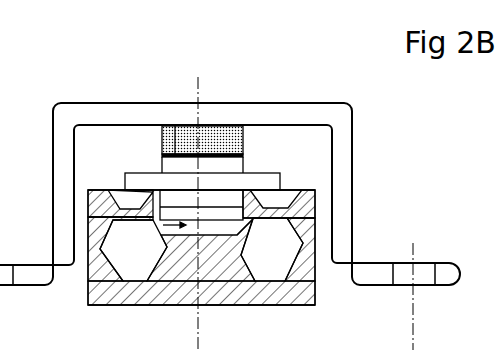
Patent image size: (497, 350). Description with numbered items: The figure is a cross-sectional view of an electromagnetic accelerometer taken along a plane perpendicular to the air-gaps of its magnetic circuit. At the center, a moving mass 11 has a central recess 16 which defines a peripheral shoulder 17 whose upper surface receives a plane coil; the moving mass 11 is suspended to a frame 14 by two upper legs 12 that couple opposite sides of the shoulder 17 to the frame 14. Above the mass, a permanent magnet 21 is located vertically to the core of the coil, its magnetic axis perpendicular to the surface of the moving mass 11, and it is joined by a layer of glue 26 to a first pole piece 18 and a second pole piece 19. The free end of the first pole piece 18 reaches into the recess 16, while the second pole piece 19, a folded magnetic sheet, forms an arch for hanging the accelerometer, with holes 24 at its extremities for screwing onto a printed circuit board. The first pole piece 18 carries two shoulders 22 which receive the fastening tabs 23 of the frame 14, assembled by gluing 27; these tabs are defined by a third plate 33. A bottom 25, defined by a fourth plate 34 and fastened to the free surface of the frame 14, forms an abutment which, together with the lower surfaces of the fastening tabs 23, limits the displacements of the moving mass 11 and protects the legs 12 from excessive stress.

The moving mass 11 is at (252, 275).
The upper legs 12 is at (117, 222).
The frame 14 is at (88, 272).
The central recess 16 is at (155, 235).
The peripheral shoulder 17 is at (252, 224).
The first pole piece 18 is at (225, 180).
The second pole piece 19 is at (59, 103).
The permanent magnet 21 is at (222, 142).
The shoulders 22 is at (132, 200).
The fastening tabs 23 is at (116, 194).
The holes 24 is at (0, 258).
The bottom 25 is at (147, 298).
The layer of glue 26 is at (188, 126).
The gluing 27 is at (140, 188).
The third plate 33 is at (353, 163).
The fourth plate 34 is at (257, 302).